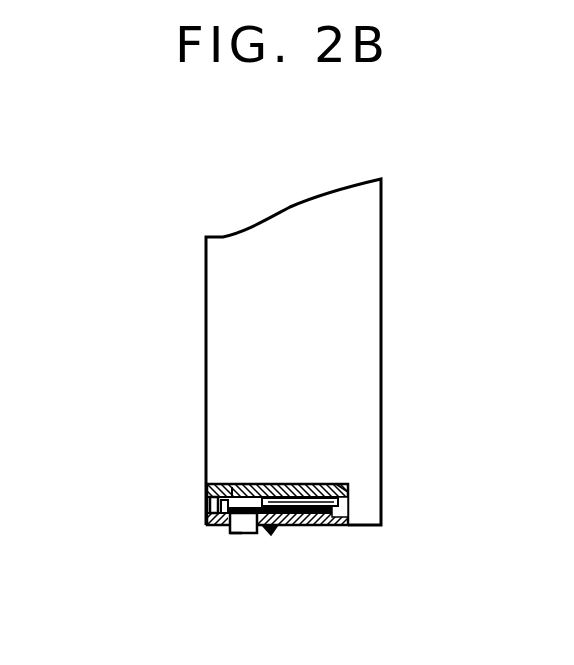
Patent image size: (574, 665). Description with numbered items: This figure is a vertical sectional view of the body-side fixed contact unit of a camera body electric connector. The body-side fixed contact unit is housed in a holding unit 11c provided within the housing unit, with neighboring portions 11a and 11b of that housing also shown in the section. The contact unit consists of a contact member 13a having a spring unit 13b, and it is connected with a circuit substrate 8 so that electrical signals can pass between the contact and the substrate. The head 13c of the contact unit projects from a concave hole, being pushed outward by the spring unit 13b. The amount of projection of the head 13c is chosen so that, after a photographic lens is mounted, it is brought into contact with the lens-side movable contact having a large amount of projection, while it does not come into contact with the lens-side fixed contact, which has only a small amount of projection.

The circuit substrate 8 is at (277, 487).
The holder projection 11a is at (232, 487).
The holder side wall 11b is at (207, 488).
The holding unit 11c is at (262, 487).
The contact member 13a is at (240, 532).
The spring unit 13b is at (328, 487).
The head 13c is at (235, 533).